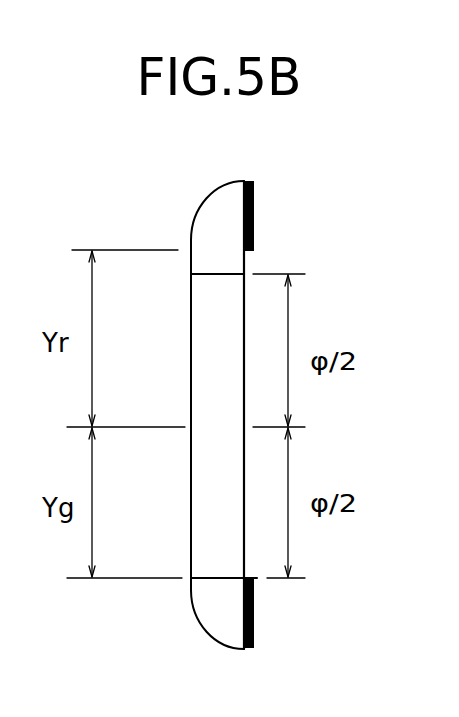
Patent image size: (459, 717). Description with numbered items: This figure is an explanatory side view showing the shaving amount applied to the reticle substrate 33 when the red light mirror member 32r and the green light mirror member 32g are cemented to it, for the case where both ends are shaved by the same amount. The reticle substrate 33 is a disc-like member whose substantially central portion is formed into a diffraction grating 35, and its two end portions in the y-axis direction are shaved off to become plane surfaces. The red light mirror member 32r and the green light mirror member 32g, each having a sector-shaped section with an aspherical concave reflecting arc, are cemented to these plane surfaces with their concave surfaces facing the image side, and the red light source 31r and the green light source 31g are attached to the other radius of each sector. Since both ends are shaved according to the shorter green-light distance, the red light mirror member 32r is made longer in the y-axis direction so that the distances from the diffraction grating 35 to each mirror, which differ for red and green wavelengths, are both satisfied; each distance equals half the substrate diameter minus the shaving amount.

The red light mirror member 32r is at (216, 202).
The red light source 31r is at (255, 196).
The reticle substrate 33 is at (227, 293).
The diffraction grating 35 is at (191, 427).
The green light mirror member 32g is at (218, 610).
The green light source 31g is at (255, 617).